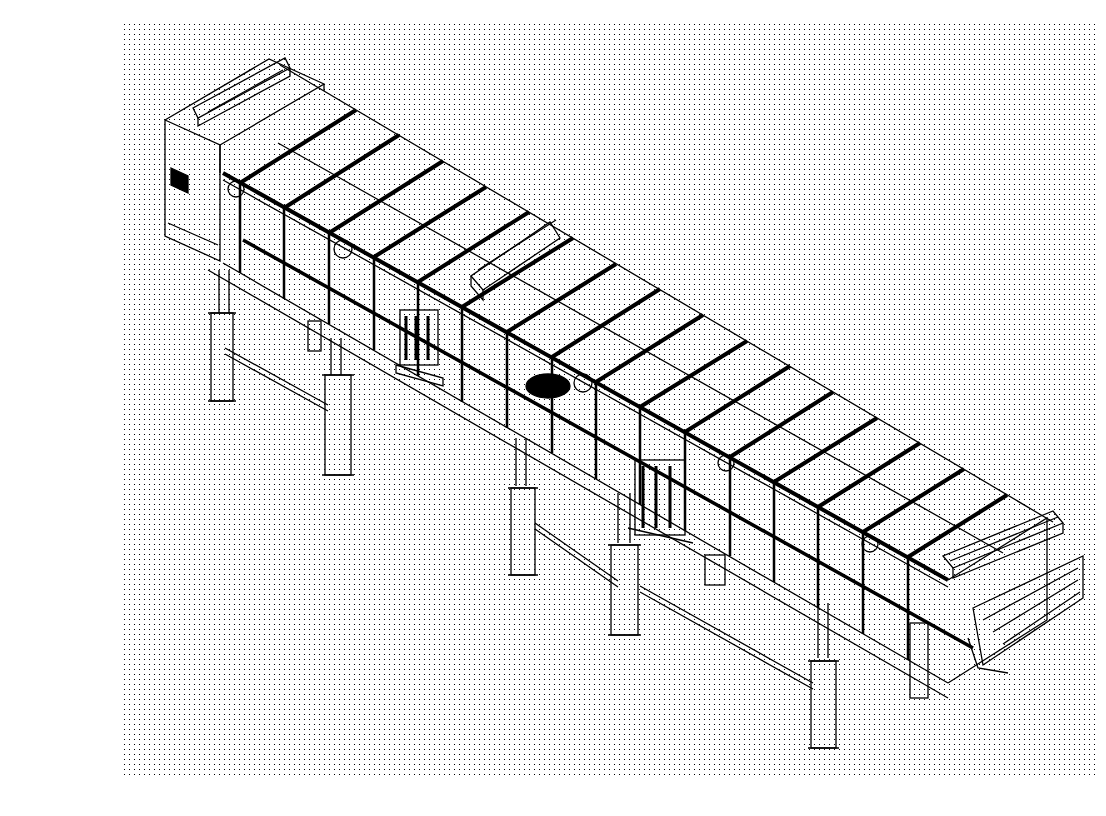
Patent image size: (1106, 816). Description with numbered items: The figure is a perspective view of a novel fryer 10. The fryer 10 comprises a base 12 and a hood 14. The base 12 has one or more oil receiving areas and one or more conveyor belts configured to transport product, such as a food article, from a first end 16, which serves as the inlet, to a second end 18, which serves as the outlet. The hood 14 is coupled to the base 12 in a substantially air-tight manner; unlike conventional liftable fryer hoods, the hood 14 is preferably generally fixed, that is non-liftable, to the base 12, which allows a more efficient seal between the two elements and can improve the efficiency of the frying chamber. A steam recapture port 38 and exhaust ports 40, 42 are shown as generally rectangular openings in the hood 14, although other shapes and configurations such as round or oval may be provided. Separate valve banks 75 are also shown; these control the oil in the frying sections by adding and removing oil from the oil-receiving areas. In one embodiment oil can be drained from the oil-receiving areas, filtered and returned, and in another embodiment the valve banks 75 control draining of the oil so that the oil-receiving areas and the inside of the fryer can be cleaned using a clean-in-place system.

The fryer 10 is at (768, 155).
The base 12 is at (483, 400).
The hood 14 is at (640, 277).
The first end 16 is at (175, 102).
The second end 18 is at (1050, 593).
The steam recapture port 38 is at (540, 223).
The exhaust port 40 is at (258, 53).
The exhaust port 42 is at (1037, 503).
The valve bank 75 is at (400, 355).